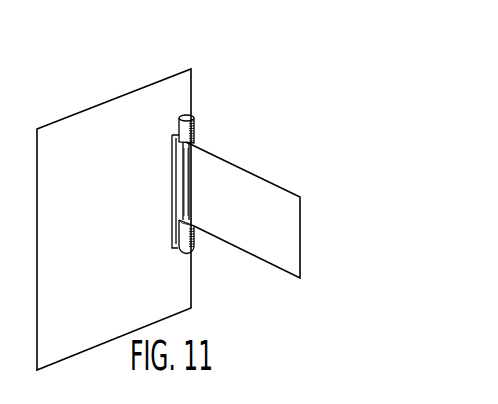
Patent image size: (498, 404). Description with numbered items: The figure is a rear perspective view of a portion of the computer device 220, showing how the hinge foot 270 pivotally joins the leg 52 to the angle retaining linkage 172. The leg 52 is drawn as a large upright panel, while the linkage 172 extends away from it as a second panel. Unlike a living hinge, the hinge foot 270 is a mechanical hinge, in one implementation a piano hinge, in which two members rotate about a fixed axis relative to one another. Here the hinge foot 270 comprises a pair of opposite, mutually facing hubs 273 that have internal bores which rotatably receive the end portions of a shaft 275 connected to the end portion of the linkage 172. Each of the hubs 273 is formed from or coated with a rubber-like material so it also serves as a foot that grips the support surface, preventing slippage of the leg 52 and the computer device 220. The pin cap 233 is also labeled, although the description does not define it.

The leg 52 is at (105, 102).
The angle retaining linkage 172 is at (270, 182).
The computer device 220 is at (377, 108).
The upper pin 233 is at (192, 116).
The hinge foot 270 is at (197, 130).
The hubs 273 is at (196, 249).
The shaft 275 is at (188, 170).